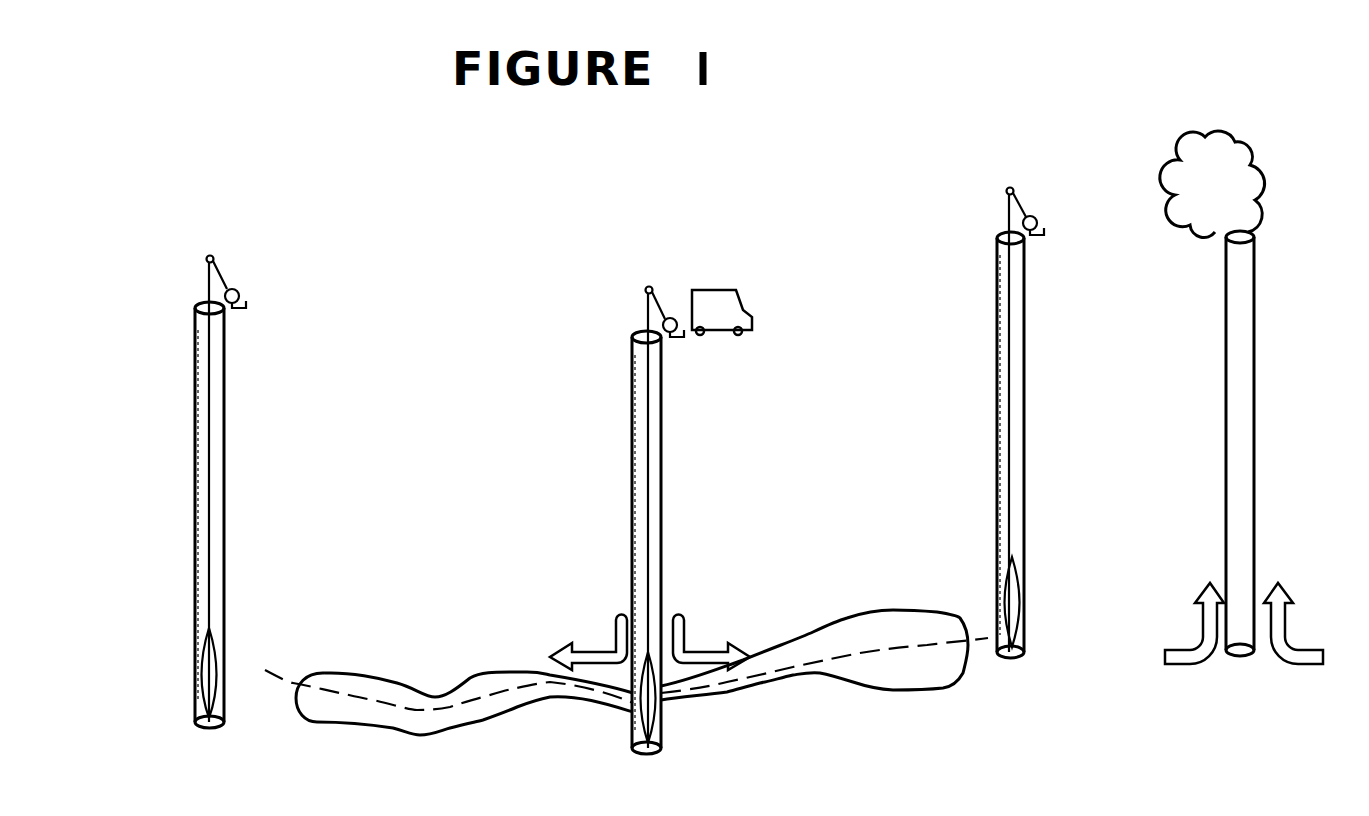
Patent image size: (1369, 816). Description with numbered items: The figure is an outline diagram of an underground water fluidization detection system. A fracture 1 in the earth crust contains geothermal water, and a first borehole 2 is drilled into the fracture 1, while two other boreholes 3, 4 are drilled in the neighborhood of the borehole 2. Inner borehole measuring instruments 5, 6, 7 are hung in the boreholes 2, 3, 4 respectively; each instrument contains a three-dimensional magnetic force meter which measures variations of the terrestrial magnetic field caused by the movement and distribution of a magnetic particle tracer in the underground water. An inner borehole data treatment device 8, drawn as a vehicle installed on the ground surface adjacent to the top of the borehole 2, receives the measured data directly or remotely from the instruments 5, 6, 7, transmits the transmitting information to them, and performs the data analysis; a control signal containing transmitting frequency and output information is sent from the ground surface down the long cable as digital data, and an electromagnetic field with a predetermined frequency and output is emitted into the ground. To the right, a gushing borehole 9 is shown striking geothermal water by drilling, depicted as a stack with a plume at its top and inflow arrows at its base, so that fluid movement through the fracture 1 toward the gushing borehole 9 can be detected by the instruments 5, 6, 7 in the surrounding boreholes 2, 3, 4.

The fracture 1 is at (820, 630).
The borehole (#1) 2 is at (662, 739).
The borehole (#2) 3 is at (1025, 477).
The borehole (#3) 4 is at (224, 580).
The inner borehole measuring instrument 5 is at (640, 725).
The inner borehole measuring instrument 6 is at (1022, 597).
The inner borehole measuring instrument 7 is at (203, 665).
The inner borehole data treatment device 8 is at (736, 290).
The gushing borehole 9 is at (1254, 380).